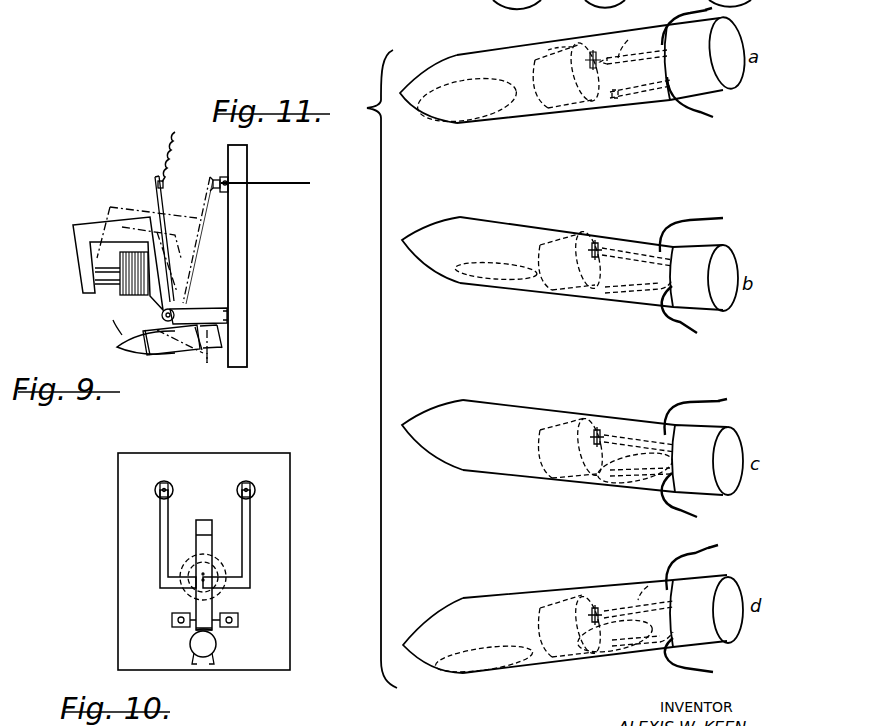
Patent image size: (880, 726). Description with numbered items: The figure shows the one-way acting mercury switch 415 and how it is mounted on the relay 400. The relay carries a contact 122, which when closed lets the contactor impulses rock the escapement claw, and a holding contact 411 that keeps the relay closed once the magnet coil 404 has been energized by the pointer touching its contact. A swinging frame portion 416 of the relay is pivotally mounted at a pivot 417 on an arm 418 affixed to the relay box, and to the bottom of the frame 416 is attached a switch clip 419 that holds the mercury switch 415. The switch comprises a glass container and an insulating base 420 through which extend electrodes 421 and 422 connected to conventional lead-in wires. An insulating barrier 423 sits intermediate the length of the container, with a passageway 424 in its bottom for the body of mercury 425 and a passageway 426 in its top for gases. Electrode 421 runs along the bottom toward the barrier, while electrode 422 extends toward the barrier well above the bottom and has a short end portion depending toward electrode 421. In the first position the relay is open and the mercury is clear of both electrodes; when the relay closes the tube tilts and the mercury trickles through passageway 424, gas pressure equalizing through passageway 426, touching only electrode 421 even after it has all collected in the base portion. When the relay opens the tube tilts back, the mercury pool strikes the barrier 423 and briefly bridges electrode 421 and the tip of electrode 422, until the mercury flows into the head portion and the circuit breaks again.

In FIG. 10, the contact 122 is at (157, 488).
In FIG. 9, the relay switch 400 is at (88, 227).
In FIG. 10, the relay switch 400 is at (160, 583).
In FIG. 9, the magnet coil 404 is at (117, 290).
In FIG. 10, the magnet coil 404 is at (215, 590).
In FIG. 10, the holding contact 411 is at (255, 490).
In FIG. 9, the mercury switch 415 is at (167, 345).
In FIG. 10, the mercury switch 415 is at (217, 645).
In FIG. 11, the mercury switch 415 is at (477, 45).
In FIG. 9, the swinging frame portion 416 is at (165, 302).
In FIG. 9, the pivot 417 is at (176, 312).
In FIG. 10, the pivot 417 is at (190, 620).
In FIG. 9, the arm 418 is at (213, 312).
In FIG. 9, the switch clip 419 is at (207, 353).
In FIG. 10, the switch clip 419 is at (190, 645).
In FIG. 11, the insulating base 420 is at (728, 90).
In FIG. 11, the electrode 421 is at (638, 98).
In FIG. 11, the electrode 422 is at (628, 40).
In FIG. 11, the insulating barrier 423 is at (565, 113).
In FIG. 11, the passageway 424 is at (604, 104).
In FIG. 11, the body of mercury 425 is at (458, 120).
In FIG. 11, the passageway 426 is at (563, 47).